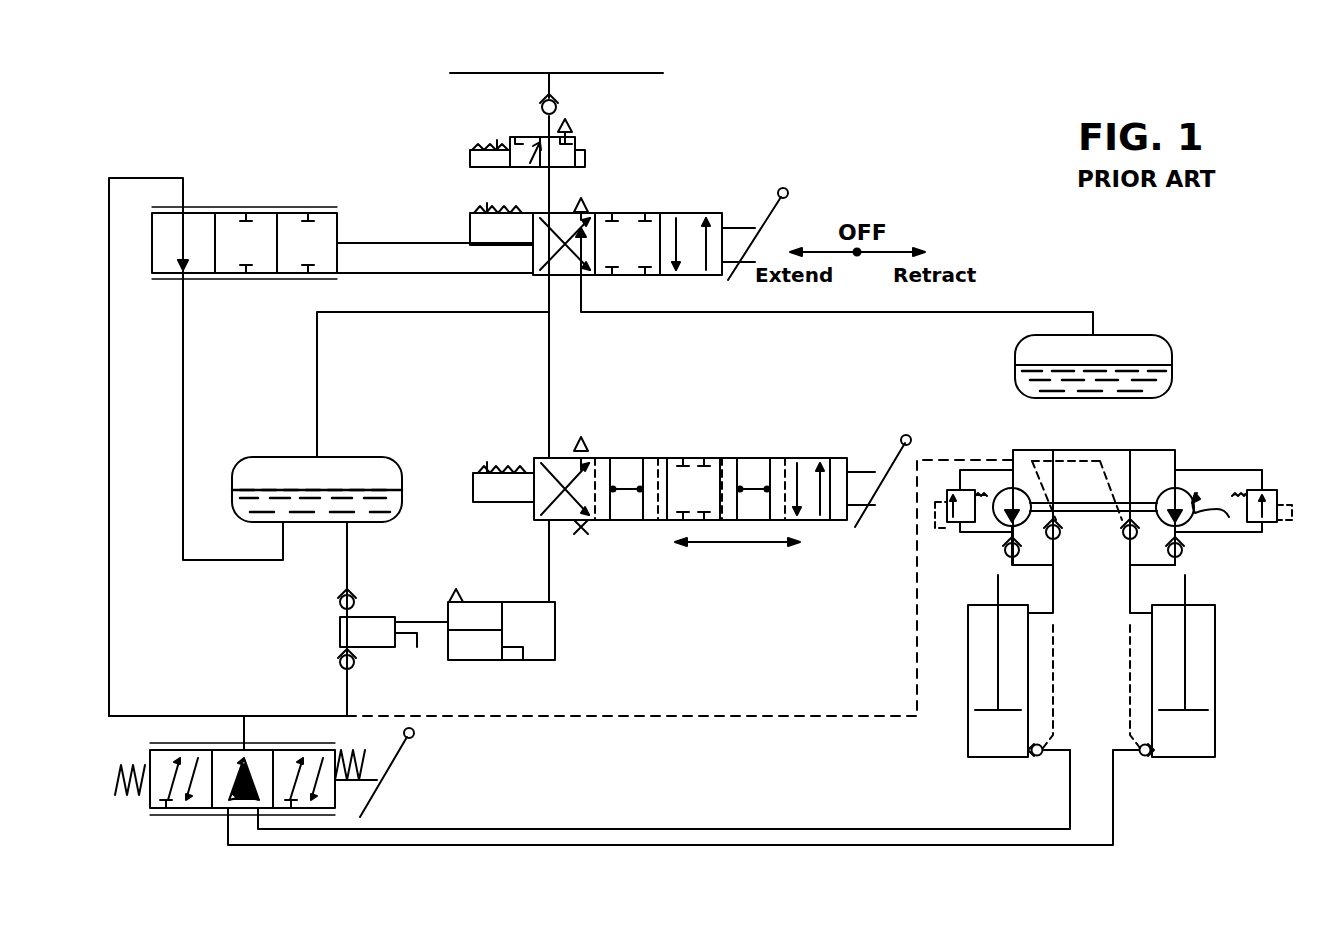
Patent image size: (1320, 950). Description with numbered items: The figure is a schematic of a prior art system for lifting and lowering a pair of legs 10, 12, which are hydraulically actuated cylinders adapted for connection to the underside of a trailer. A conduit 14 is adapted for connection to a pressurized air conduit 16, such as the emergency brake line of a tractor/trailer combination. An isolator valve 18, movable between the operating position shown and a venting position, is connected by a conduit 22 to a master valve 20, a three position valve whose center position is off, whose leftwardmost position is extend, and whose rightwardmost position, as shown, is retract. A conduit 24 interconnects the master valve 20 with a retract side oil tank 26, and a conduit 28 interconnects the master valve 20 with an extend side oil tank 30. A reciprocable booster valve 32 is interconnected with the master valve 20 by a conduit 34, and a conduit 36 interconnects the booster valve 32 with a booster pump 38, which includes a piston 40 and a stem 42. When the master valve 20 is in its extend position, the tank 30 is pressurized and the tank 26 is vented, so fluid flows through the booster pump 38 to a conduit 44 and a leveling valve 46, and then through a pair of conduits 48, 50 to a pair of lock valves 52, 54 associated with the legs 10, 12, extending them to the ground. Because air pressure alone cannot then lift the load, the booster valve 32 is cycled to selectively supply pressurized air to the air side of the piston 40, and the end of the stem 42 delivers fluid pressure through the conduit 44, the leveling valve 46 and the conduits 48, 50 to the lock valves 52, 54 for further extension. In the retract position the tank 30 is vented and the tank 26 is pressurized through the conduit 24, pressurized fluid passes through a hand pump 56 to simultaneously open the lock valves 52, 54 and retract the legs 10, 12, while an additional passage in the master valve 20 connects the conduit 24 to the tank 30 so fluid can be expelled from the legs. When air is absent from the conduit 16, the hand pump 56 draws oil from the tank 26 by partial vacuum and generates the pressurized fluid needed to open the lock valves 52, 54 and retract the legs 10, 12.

The leg 10 is at (968, 740).
The leg 12 is at (1215, 735).
The conduit 14 is at (556, 88).
The pressurized air conduit 16 is at (598, 73).
The isolator valve 18 is at (630, 150).
The master valve 20 is at (420, 212).
The conduit 22 is at (550, 186).
The conduit 24 is at (748, 313).
The retract side oil tank 26 is at (1170, 337).
The conduit 28 is at (430, 320).
The extend side oil tank 30 is at (355, 457).
The booster valve 32 is at (690, 440).
The conduit 34 is at (549, 395).
The conduit 36 is at (549, 583).
The booster pump 38 is at (565, 650).
The piston 40 is at (523, 647).
The stem 42 is at (415, 648).
The conduit 44 is at (250, 716).
The leveling valve 46 is at (205, 845).
The conduit 48 is at (445, 829).
The conduit 50 is at (525, 845).
The lock valve 52 is at (1037, 762).
The lock valve 54 is at (1135, 762).
The hand pump 56 is at (1225, 543).